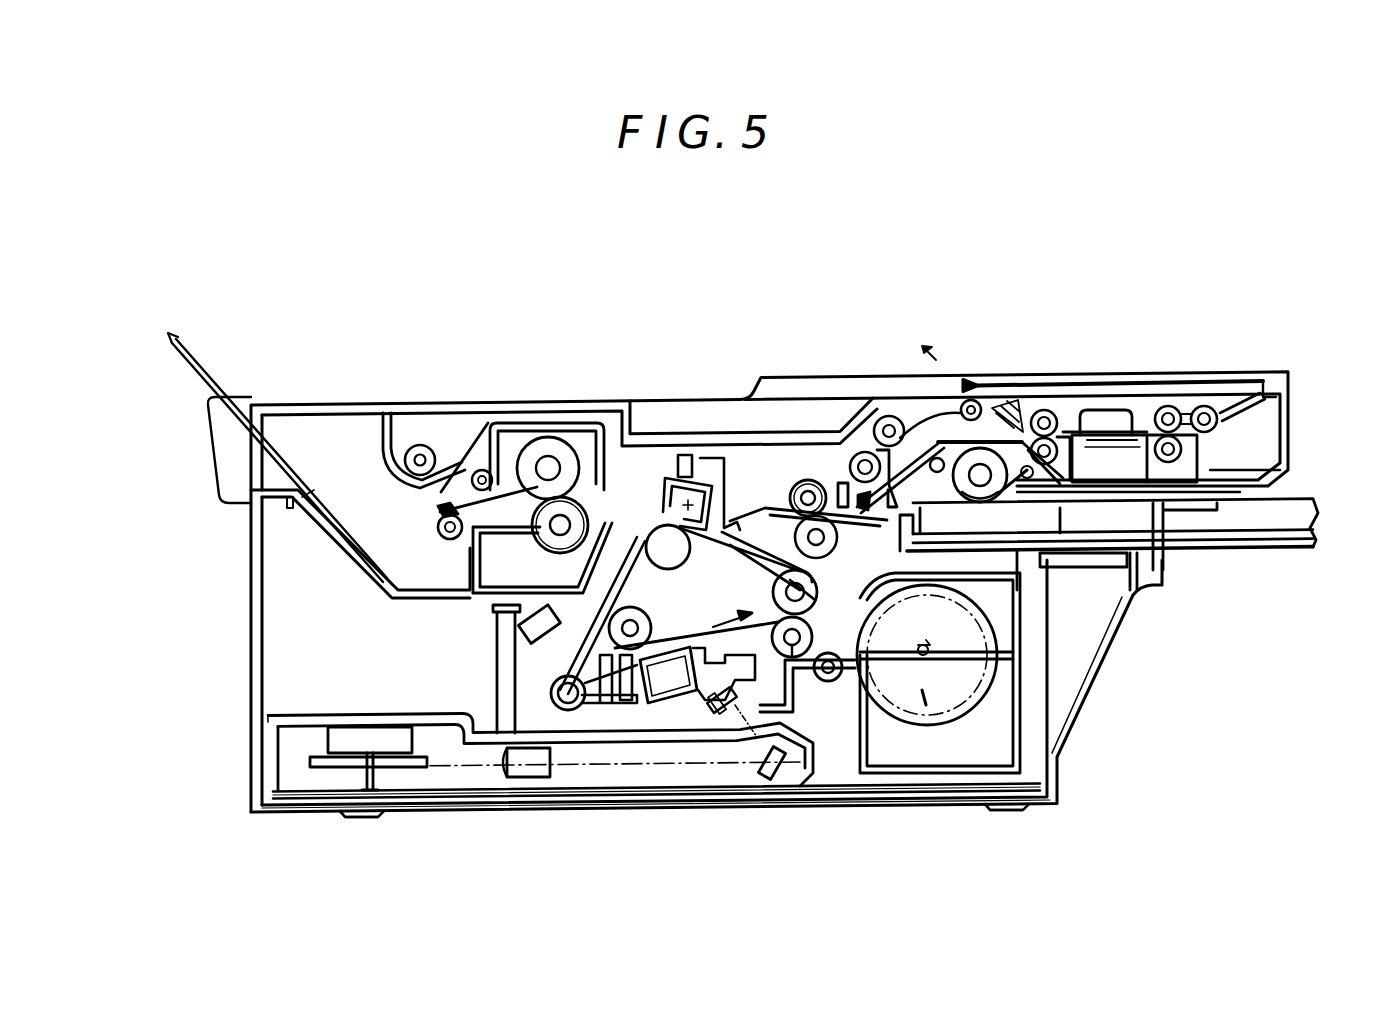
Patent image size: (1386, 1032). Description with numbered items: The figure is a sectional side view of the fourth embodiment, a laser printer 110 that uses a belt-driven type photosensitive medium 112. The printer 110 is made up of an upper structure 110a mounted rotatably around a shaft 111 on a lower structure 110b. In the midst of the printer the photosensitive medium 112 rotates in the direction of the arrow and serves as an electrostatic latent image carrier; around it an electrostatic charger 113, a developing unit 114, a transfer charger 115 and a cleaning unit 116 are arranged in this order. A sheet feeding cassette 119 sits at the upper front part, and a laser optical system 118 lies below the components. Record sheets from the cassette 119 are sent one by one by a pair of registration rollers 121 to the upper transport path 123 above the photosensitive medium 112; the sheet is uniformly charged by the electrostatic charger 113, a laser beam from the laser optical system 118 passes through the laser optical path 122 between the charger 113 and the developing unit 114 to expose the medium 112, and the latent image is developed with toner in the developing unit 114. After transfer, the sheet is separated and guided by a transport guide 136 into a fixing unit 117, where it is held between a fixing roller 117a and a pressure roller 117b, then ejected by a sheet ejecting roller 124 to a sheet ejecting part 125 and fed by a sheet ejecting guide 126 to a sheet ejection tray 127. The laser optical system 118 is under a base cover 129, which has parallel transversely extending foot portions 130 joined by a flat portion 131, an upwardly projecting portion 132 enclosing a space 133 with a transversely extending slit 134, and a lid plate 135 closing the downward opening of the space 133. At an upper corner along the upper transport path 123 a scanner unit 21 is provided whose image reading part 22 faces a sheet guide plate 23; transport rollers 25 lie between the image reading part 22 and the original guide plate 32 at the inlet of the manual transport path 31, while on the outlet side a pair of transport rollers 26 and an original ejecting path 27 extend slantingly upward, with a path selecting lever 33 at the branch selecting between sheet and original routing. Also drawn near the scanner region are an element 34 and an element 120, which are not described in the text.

The scanner unit 21 is at (1097, 405).
The image reading part 22 is at (1108, 478).
The sheet guide plate 23 is at (1128, 400).
The transport rollers 25 is at (1172, 402).
The pair of transport rollers 26 is at (1047, 408).
The original ejecting path 27 is at (963, 400).
The manual transport path 31 is at (1262, 470).
The sheet guide plate 32 is at (1238, 395).
The path selecting lever 33 is at (1015, 400).
The lever 34 is at (1050, 650).
The laser printer 110 is at (913, 367).
The upper structure 110a is at (868, 452).
The lower structure 110b is at (962, 400).
The shaft 111 is at (420, 445).
The belt-driven type photosensitive medium 112 is at (708, 473).
The electrostatic charger 113 is at (670, 687).
The developing unit 114 is at (1002, 618).
The transfer charger 115 is at (685, 473).
The cleaning unit 116 is at (618, 710).
The fixing unit 117 is at (525, 406).
The fixing roller 117a is at (512, 478).
The pressure roller 117b is at (558, 440).
The laser optical system 118 is at (430, 766).
The sheet feeding cassette 119 is at (1190, 550).
The drive gear 120 is at (1002, 455).
The registration rollers 121 is at (795, 478).
The laser optical path 122 is at (713, 687).
The upper transport path 123 is at (785, 517).
The sheet ejecting roller 124 is at (443, 437).
The sheet ejecting part 125 is at (366, 445).
The sheet ejecting guide 126 is at (332, 497).
The sheet ejection tray 127 is at (182, 335).
The base cover 129 is at (270, 723).
The foot portions 130 is at (357, 816).
The flat portion 131 is at (912, 782).
The upwardly projecting portion 132 is at (360, 722).
The space 133 is at (440, 740).
The slit 134 is at (757, 737).
The lid plate 135 is at (573, 793).
The transport guide 136 is at (645, 500).